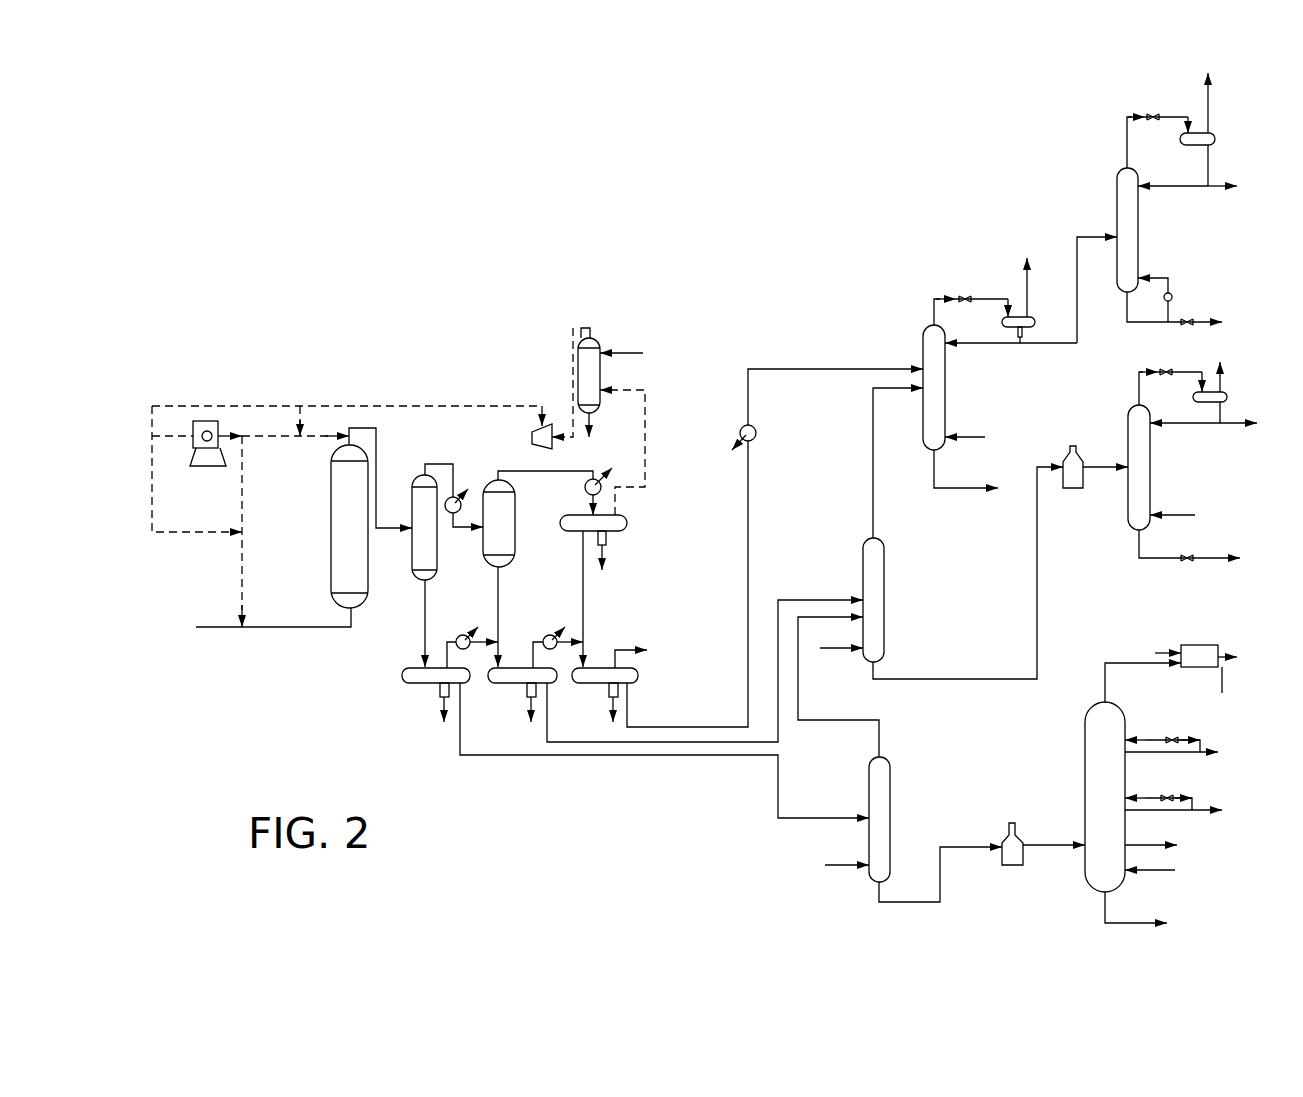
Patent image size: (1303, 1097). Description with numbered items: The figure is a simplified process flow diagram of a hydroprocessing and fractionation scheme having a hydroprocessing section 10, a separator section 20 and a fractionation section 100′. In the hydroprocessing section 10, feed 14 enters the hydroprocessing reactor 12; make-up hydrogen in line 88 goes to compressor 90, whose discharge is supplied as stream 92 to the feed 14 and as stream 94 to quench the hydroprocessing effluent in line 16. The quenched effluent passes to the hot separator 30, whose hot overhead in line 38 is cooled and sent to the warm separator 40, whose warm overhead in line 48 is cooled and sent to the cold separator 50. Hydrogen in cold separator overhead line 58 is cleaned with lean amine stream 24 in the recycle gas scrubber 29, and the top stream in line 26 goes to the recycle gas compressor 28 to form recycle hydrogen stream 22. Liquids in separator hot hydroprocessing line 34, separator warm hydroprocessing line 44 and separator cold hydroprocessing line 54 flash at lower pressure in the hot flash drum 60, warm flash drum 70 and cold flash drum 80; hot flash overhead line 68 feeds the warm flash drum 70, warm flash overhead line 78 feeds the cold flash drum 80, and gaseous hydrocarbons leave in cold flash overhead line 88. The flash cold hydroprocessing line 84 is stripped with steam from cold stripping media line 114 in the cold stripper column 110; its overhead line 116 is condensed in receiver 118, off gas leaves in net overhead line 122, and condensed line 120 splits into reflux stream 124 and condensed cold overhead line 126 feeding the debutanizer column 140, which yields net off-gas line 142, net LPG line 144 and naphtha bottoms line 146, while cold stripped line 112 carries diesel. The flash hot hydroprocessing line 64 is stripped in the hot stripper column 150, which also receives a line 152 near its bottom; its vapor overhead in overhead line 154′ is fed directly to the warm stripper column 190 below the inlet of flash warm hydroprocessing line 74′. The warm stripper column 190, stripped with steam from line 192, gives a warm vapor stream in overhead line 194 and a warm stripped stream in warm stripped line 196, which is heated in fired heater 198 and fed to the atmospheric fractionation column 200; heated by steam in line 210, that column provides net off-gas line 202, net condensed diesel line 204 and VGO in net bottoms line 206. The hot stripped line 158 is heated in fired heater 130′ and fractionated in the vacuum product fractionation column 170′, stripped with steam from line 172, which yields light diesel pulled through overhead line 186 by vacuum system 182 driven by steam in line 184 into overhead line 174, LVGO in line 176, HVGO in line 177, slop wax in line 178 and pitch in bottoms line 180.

The hydroprocessing section 10 is at (322, 338).
The hydroprocessing reactor 12 is at (333, 553).
The feed 14 is at (212, 627).
The hydroprocessing effluent line 16 is at (378, 441).
The separator section 20 is at (688, 546).
The recycle hydrogen stream 22 is at (372, 406).
The lean amine stream 24 is at (634, 353).
The top stream line 26 is at (573, 336).
The recycle gas compressor 28 is at (530, 437).
The recycle gas scrubber 29 is at (594, 337).
The hot separator 30 is at (430, 582).
The separator hot hydroprocessing line 34 is at (424, 618).
The hot overhead line 38 is at (454, 476).
The warm separator 40 is at (516, 548).
The separator warm hydroprocessing line 44 is at (500, 576).
The warm overhead line 48 is at (528, 472).
The cold separator 50 is at (575, 534).
The separator cold hydroprocessing line 54 is at (585, 594).
The cold separator overhead line 58 is at (645, 444).
The hot flash drum 60 is at (430, 683).
The flash hot hydroprocessing line 64 is at (475, 755).
The hot flash overhead line 68 is at (447, 646).
The warm flash drum 70 is at (522, 668).
The flash warm hydroprocessing line 74′ is at (562, 742).
The warm flash overhead line 78 is at (539, 642).
The cold flash drum 80 is at (600, 668).
The flash cold hydroprocessing line 84 is at (662, 727).
The make-up hydrogen line 88 is at (193, 446).
The compressor 90 is at (215, 466).
The hydrogen stream to feed 92 is at (240, 516).
The hydrogen quench stream 94 is at (262, 440).
The fractionation section 100′ is at (905, 240).
The cold stripper column 110 is at (946, 384).
The cold stripped line 112 is at (955, 488).
The cold stripping media line 114 is at (970, 437).
The cold stripper overhead line 116 is at (933, 300).
The receiver 118 is at (1023, 317).
The condensed line 120 is at (1025, 342).
The net overhead line 122 is at (1027, 281).
The reflux stream line 124 is at (1005, 344).
The condensed cold overhead line 126 is at (1067, 345).
The fired heater 130′ is at (1012, 866).
The debutanizer column 140 is at (1139, 229).
The net off-gas line 142 is at (1208, 95).
The net LPG line 144 is at (1212, 187).
The debutanizer bottoms line 146 is at (1176, 321).
The hot stripper column 150 is at (890, 790).
The stripping medium stream 152 is at (832, 865).
The hot stripper overhead line 154′ is at (879, 742).
The hot stripped line 158 is at (940, 870).
The product fractionation column 170′ is at (1085, 799).
The stripping media line 172 is at (1160, 871).
The light diesel overhead line 174 is at (1224, 685).
The LVGO line 176 is at (1200, 745).
The HVGO line 177 is at (1207, 805).
The slop wax line 178 is at (1150, 850).
The bottoms pitch line 180 is at (1105, 916).
The vacuum system 182 is at (1190, 672).
The steam line 184 is at (1167, 652).
The product fractionation overhead line 186 is at (1100, 673).
The warm stripper column 190 is at (884, 582).
The warm stripping media line 192 is at (835, 648).
The warm stripper overhead line 194 is at (873, 464).
The warm stripped line 196 is at (930, 679).
The fired heater 198 is at (1073, 489).
The atmospheric fractionation column 200 is at (1150, 470).
The net off-gas line 202 is at (1215, 392).
The net condensed diesel line 204 is at (1232, 424).
The net bottoms line 206 is at (1209, 558).
The steam line 210 is at (1176, 516).